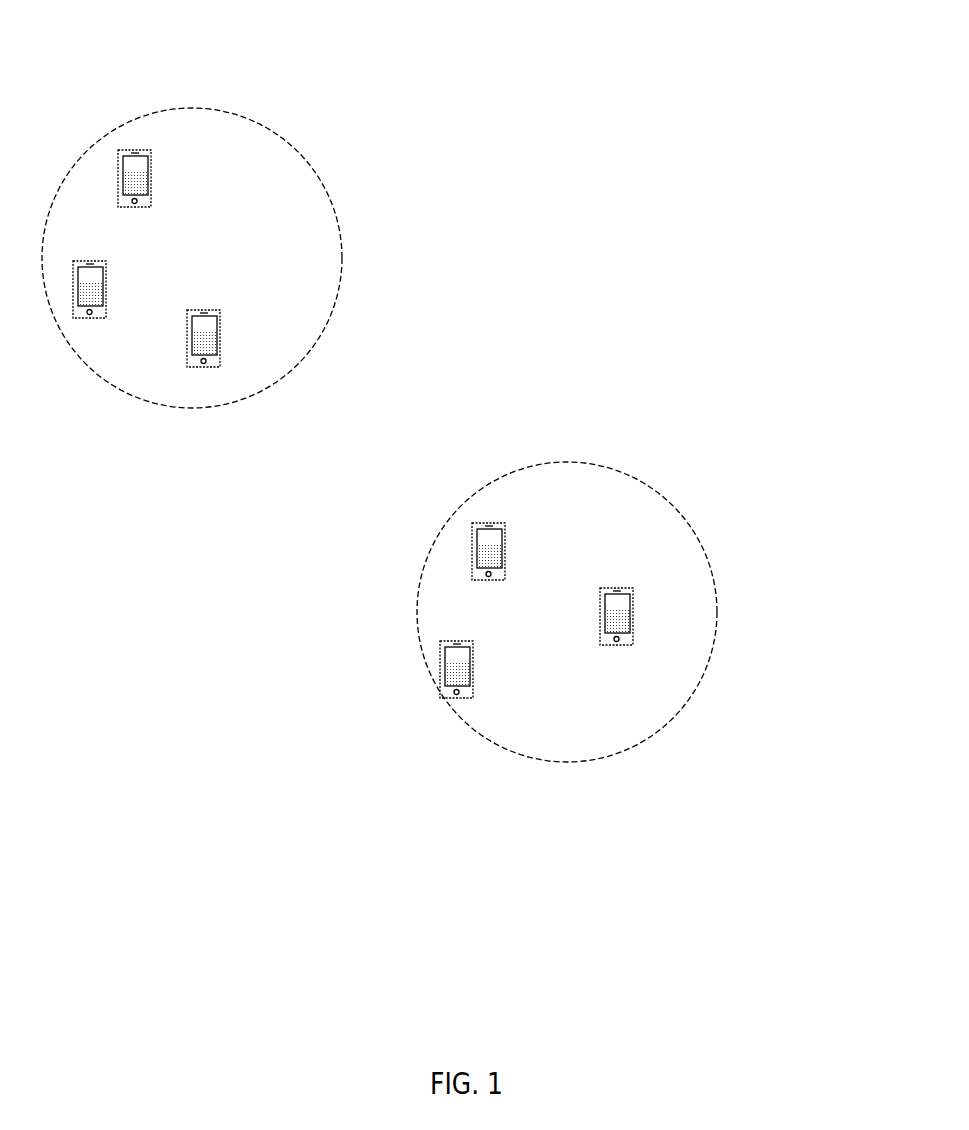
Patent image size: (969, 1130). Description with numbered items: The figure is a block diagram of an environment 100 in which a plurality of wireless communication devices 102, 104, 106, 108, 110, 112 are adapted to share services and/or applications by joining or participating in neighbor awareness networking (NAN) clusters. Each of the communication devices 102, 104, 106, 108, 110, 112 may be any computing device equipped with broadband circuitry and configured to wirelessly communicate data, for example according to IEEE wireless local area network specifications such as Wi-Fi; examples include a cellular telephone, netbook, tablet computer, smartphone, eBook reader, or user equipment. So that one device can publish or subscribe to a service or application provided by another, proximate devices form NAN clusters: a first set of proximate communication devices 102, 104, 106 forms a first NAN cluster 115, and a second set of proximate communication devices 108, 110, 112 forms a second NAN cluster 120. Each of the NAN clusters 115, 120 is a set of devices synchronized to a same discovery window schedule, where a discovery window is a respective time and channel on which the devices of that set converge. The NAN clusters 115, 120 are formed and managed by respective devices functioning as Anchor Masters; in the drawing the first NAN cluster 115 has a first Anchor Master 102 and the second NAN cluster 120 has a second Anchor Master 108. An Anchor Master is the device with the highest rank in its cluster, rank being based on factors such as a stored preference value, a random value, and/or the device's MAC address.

The environment 100 is at (799, 68).
The communication device 102 is at (215, 173).
The communication device 104 is at (165, 288).
The communication device 106 is at (283, 338).
The communication device 108 is at (568, 551).
The communication device 110 is at (696, 615).
The communication device 112 is at (528, 668).
The first NAN cluster 115 is at (415, 258).
The second NAN cluster 120 is at (793, 607).